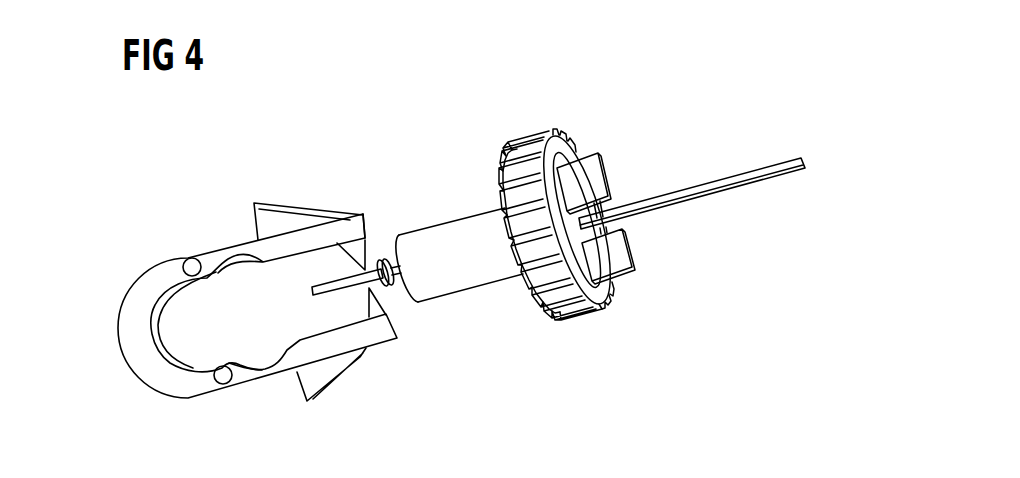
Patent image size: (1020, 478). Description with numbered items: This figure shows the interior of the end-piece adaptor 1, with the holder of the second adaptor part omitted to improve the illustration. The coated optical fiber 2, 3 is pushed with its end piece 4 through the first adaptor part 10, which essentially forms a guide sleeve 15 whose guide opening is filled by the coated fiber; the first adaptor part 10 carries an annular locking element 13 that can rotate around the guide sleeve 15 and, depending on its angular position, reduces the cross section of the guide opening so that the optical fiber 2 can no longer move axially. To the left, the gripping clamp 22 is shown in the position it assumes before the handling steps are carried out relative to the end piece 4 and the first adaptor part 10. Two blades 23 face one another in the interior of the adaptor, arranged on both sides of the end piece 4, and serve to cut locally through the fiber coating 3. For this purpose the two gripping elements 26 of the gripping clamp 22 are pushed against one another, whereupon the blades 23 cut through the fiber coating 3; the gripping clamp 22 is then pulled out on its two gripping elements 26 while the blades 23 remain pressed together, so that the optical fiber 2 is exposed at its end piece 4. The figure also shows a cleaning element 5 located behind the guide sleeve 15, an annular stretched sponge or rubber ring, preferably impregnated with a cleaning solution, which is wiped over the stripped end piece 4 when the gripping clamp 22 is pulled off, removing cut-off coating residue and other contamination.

The end-piece adaptor 1 is at (235, 168).
The optical fiber 2 is at (760, 170).
The fiber coating 3 is at (690, 188).
The end piece 4 is at (332, 291).
The cleaning element 5 is at (398, 289).
The first adaptor part 10 is at (455, 235).
The guide sleeve 15 is at (452, 221).
The annular locking element 13 is at (530, 150).
The gripping clamp 22 is at (171, 268).
The blades 23 is at (363, 250).
The gripping elements 26 is at (272, 206).